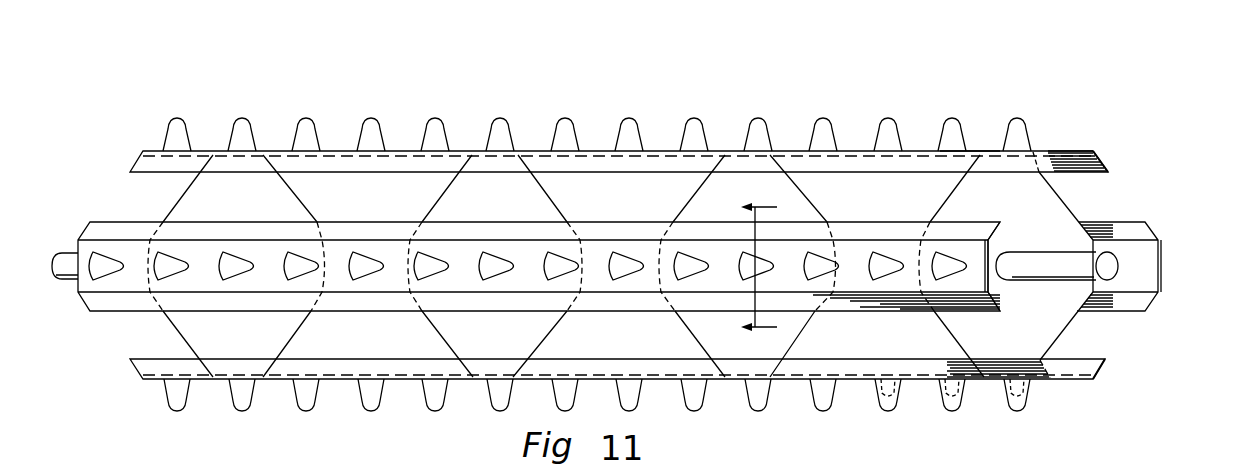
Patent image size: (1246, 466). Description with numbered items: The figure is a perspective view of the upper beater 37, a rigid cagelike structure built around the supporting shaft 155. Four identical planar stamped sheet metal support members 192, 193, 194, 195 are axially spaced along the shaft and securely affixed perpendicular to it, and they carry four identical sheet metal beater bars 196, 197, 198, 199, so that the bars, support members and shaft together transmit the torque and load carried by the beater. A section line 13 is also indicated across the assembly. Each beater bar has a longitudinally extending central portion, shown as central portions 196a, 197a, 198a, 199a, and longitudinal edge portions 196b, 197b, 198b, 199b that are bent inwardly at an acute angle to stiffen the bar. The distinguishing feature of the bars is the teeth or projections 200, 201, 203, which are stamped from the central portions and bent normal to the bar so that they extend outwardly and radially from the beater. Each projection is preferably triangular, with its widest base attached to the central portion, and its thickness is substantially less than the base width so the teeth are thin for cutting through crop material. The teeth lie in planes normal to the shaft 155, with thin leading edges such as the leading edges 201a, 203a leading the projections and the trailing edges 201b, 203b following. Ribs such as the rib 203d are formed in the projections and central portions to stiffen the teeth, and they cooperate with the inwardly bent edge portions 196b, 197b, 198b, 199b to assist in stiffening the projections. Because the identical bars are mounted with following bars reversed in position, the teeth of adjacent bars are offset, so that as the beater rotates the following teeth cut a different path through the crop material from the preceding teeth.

The upper beater 37 is at (666, 87).
The section line 13- 13 is at (762, 266).
The supporting shaft 155 is at (1113, 268).
The support member 192 is at (273, 203).
The support member 193 is at (533, 200).
The support member 194 is at (793, 200).
The support member 195 is at (1050, 193).
The beater bar 196 is at (996, 241).
The central portion 196a is at (977, 280).
The longitudinal edge portion 196b is at (978, 222).
The beater bar 197 is at (1082, 144).
The central portion 197a is at (1057, 151).
The longitudinal edge portion 197b is at (1102, 160).
The beater bar 198 is at (1166, 276).
The central portion 198a is at (1159, 255).
The longitudinal edge portion 198b is at (1153, 230).
The beater bar 199 is at (1104, 379).
The central portion 199a is at (1078, 380).
The longitudinal edge portion 199b is at (1100, 370).
The projection 200 is at (802, 260).
The projection 201 is at (771, 122).
The leading edge 201a is at (935, 102).
The trailing edge 201b is at (970, 118).
The projection 203 is at (1010, 412).
The leading edge 203a is at (878, 395).
The trailing edge 203b is at (900, 395).
The rib 203d is at (1020, 395).